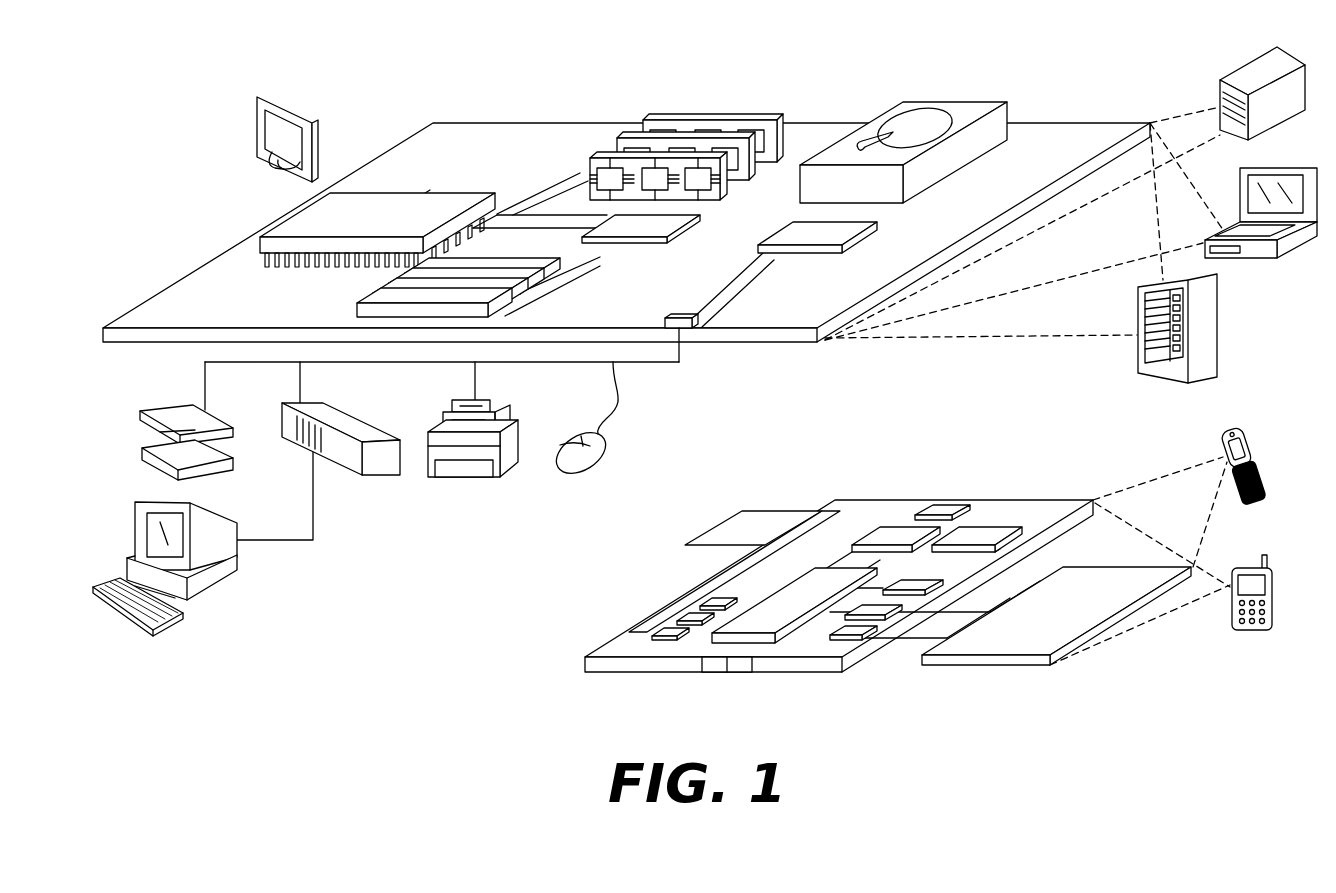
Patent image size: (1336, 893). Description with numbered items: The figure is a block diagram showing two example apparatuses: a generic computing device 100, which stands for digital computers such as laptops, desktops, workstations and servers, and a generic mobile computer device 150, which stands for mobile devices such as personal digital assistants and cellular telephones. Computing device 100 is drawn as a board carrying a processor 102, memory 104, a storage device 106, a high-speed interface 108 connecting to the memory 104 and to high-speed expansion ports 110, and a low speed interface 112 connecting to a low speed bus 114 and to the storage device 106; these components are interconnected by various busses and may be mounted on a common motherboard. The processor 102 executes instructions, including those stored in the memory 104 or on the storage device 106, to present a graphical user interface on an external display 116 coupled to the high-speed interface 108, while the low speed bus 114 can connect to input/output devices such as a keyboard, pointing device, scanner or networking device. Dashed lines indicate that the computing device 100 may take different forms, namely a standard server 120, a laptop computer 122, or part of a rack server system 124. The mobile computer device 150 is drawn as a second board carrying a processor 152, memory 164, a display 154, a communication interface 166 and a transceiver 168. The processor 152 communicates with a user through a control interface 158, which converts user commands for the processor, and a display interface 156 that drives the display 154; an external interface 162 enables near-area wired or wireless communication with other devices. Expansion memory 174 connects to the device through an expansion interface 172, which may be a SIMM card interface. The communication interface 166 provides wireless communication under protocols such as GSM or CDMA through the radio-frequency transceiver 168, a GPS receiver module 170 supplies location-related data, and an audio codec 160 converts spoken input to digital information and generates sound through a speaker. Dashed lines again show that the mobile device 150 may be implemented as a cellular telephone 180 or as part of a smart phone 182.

The computing device 100 is at (385, 72).
The processor 102 is at (283, 216).
The memory 104 is at (717, 120).
The storage device 106 is at (943, 103).
The high-speed interface 108 is at (655, 224).
The high-speed expansion ports 110 is at (376, 293).
The low speed interface 112 is at (791, 225).
The low speed bus 114 is at (683, 312).
The display 116 is at (263, 97).
The standard server 120 is at (1242, 75).
The laptop computer 122 is at (1293, 168).
The rack server system 124 is at (1222, 331).
The mobile computer device 150 is at (536, 683).
The processor 152 is at (763, 612).
The display 154 is at (1096, 581).
The display interface 156 is at (858, 641).
The control interface 158 is at (888, 617).
The audio codec 160 is at (918, 580).
The external interface 162 is at (727, 672).
The memory 164 is at (686, 617).
The communication interface 166 is at (893, 531).
The transceiver 168 is at (983, 531).
The GPS receiver module 170 is at (946, 510).
The expansion interface 172 is at (821, 511).
The expansion memory 174 is at (741, 511).
The cellular telephone 180 is at (1236, 430).
The smart phone 182 is at (1250, 568).